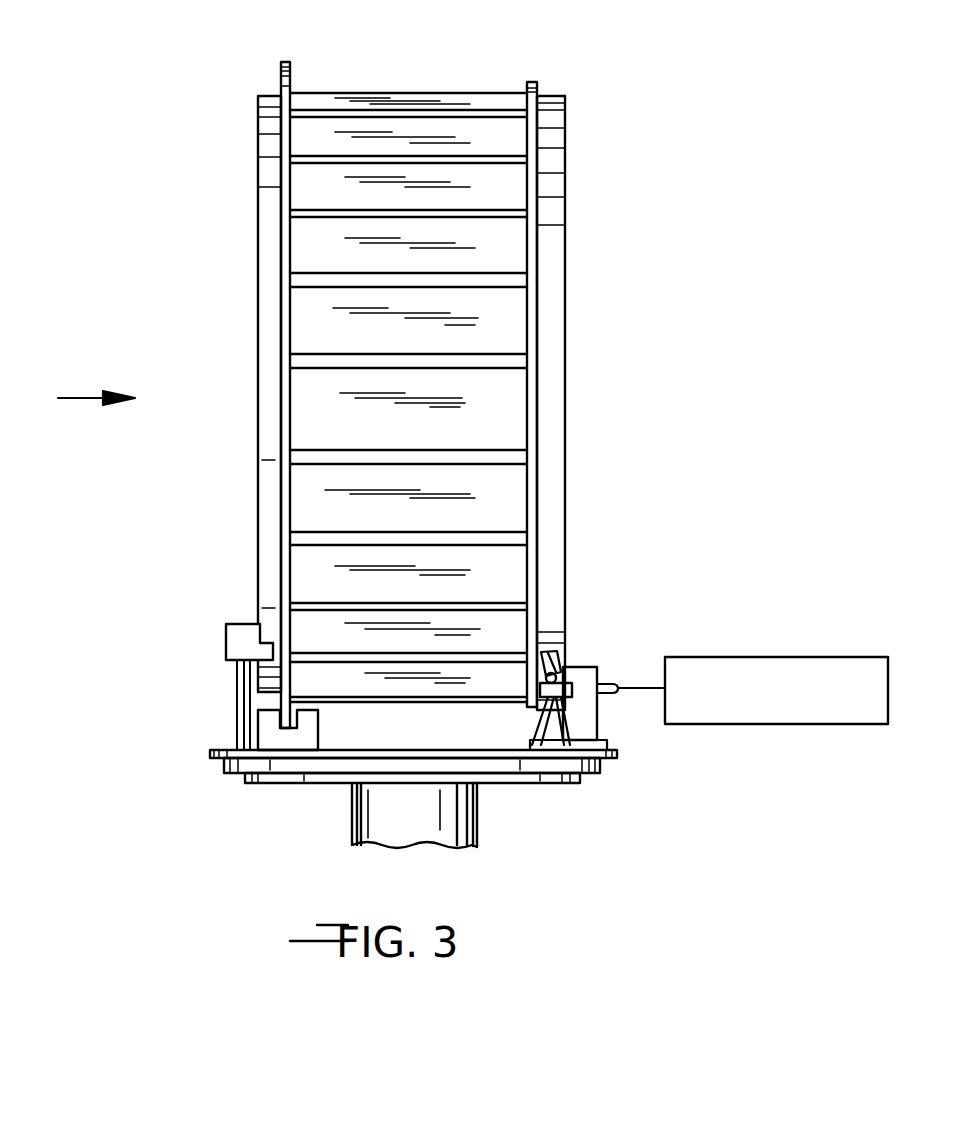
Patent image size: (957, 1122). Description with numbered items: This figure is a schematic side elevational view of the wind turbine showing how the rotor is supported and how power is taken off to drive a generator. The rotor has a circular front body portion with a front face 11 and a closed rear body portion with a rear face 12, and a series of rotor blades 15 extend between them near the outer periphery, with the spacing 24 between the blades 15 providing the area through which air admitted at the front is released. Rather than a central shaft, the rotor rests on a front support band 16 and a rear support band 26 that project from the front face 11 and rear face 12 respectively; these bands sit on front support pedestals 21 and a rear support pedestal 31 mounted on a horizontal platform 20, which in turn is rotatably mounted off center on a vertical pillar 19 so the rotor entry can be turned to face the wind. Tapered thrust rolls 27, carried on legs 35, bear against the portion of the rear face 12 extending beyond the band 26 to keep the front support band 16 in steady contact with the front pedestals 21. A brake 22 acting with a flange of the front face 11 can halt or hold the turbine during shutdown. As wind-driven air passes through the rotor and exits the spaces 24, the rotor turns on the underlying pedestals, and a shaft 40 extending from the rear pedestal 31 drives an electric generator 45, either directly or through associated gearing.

The front face 11 is at (279, 184).
The rear face 12 is at (538, 178).
The rotor blades 15 is at (413, 187).
The front support band 16 is at (268, 328).
The vertical pillar 19 is at (352, 825).
The horizontal platform 20 is at (588, 758).
The front support pedestal 21 is at (232, 623).
The brake 22 is at (318, 730).
The spacing between the blades 24 is at (460, 213).
The rear support band 26 is at (552, 245).
The thrust roll 27 is at (563, 667).
The rear support pedestal 31 is at (580, 668).
The legs 35 is at (565, 728).
The shaft 40 is at (610, 667).
The electric generator 45 is at (747, 657).